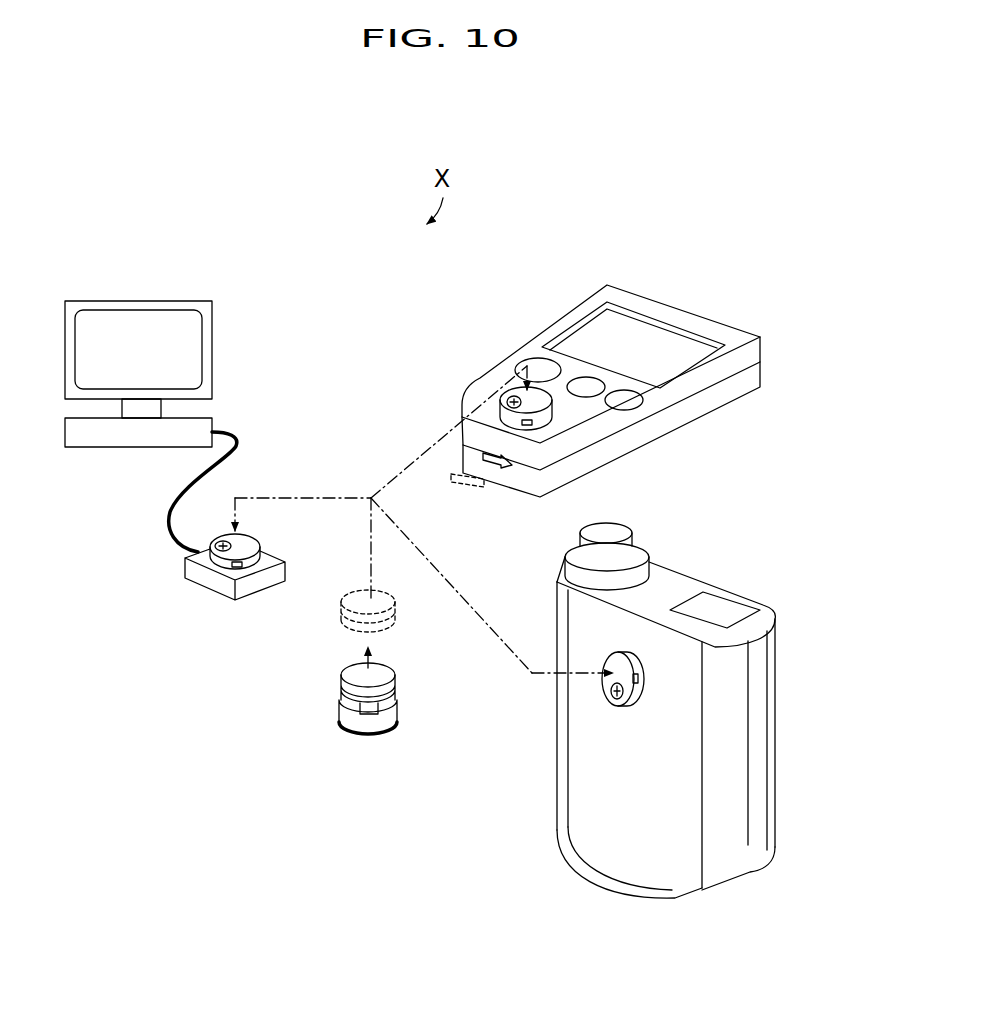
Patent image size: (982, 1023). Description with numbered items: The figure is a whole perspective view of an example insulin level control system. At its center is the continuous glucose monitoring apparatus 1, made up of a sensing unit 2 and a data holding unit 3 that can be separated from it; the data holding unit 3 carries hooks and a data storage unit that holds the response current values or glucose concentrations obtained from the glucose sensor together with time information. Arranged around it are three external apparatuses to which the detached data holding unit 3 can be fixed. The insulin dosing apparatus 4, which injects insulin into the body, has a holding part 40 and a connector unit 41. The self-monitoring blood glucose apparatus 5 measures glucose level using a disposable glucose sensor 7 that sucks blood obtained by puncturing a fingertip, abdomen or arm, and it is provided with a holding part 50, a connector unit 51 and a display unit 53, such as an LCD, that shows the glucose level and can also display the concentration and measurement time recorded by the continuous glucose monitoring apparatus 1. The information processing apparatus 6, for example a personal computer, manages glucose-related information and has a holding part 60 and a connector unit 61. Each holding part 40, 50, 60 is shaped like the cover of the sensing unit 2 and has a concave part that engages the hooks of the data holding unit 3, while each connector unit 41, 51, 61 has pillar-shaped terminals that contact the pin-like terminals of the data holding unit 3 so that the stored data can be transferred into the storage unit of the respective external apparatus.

The continuous glucose monitoring apparatus 1 is at (366, 662).
The sensing unit 2 is at (346, 708).
The data holding unit 3 is at (341, 610).
The insulin dosing apparatus 4 is at (666, 708).
The holding part 40 is at (612, 678).
The connector unit 41 is at (612, 699).
The self-monitoring blood glucose apparatus 5 is at (605, 391).
The holding part 50 is at (556, 388).
The connector unit 51 is at (521, 402).
The display unit 53 is at (577, 338).
The information processing apparatus 6 is at (210, 290).
The holding part 60 is at (251, 550).
The connector unit 61 is at (222, 542).
The disposable glucose sensor 7 is at (481, 486).